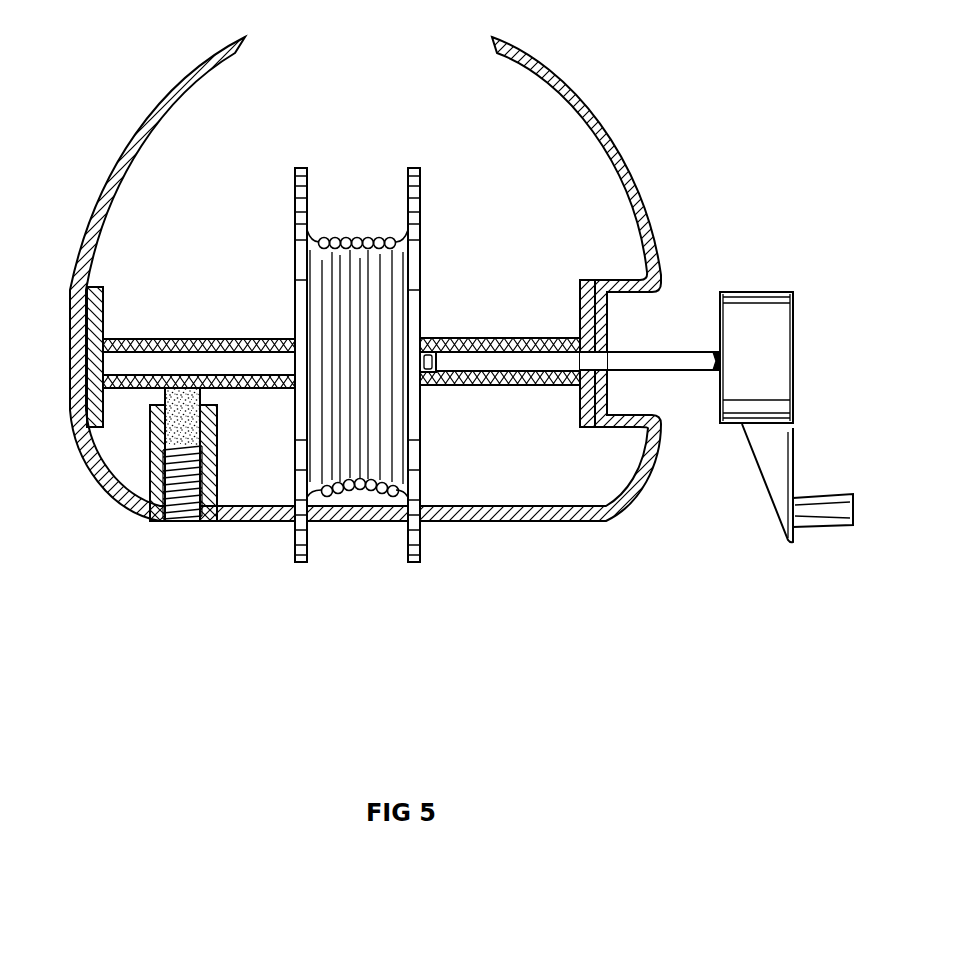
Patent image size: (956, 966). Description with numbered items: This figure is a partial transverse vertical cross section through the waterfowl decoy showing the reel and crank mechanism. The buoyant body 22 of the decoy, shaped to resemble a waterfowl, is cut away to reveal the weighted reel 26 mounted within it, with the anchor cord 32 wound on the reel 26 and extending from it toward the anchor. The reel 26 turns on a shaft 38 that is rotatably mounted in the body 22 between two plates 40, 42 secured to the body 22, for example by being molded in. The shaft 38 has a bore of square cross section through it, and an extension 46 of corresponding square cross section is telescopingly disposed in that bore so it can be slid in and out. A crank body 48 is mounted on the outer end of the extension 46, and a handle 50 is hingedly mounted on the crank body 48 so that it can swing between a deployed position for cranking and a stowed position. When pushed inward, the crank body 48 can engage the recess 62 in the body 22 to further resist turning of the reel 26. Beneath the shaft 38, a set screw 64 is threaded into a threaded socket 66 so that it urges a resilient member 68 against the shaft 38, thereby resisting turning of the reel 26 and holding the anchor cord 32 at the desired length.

The buoyant body 22 is at (605, 525).
The weighted reel 26 is at (422, 552).
The anchor cord 32 is at (328, 238).
The shaft 38 is at (487, 392).
The plate 40 is at (97, 285).
The plate 42 is at (577, 300).
The extension 46 is at (633, 357).
The crank body 48 is at (753, 308).
The handle 50 is at (770, 443).
The recess 62 is at (640, 400).
The set screw 64 is at (187, 510).
The threaded socket 66 is at (212, 433).
The resilient member 68 is at (178, 413).